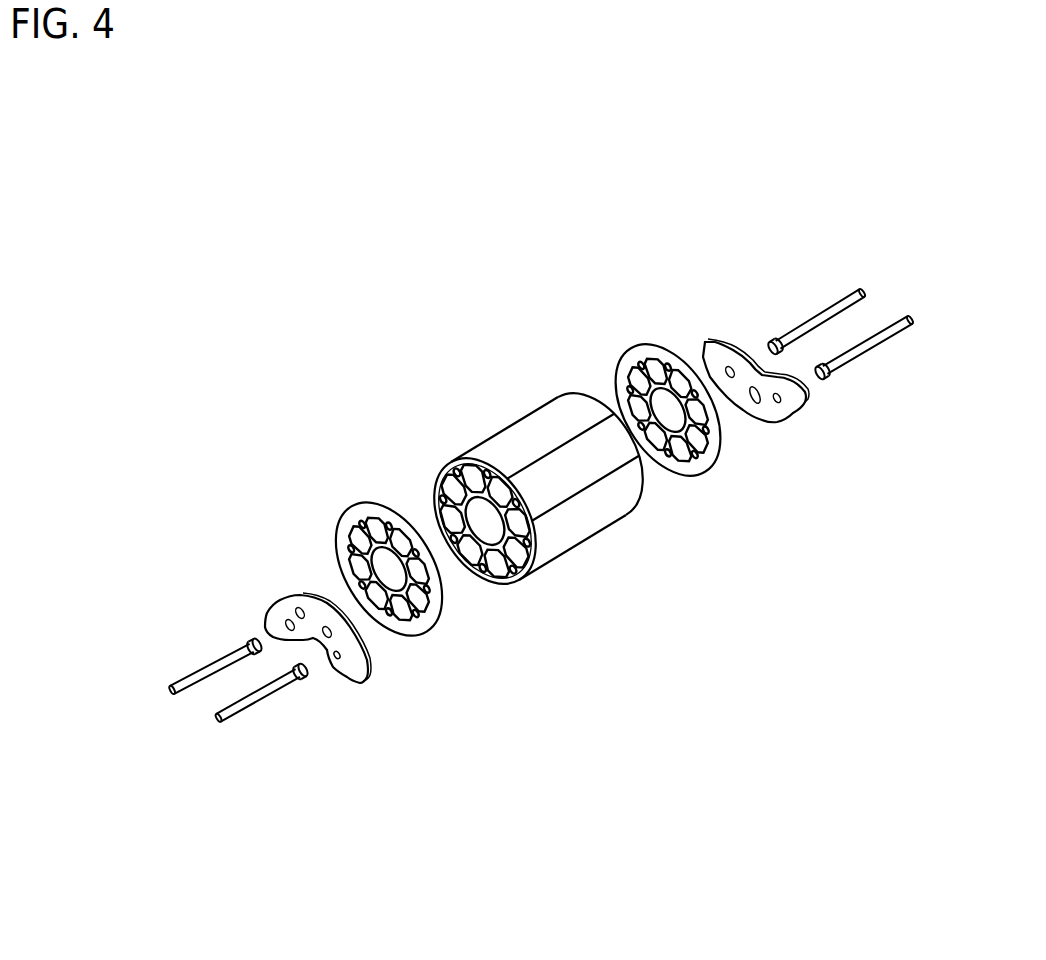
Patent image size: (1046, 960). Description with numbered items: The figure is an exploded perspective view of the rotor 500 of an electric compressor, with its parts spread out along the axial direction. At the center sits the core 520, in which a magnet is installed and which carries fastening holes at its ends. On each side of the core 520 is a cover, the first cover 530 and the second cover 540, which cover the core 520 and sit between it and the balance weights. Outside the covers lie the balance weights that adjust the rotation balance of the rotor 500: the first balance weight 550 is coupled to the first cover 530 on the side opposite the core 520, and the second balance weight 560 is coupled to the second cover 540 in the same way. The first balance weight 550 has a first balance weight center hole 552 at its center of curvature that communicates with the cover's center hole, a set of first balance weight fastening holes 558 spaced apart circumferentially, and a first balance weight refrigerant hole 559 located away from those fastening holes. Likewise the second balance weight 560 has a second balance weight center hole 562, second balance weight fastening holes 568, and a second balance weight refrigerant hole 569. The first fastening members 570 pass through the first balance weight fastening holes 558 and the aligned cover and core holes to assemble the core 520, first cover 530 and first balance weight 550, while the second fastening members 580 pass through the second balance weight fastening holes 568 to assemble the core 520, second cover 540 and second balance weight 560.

The rotor 500 is at (175, 284).
The core 520 is at (487, 418).
The first cover 530 is at (352, 500).
The second cover 540 is at (623, 337).
The first balance weight 550 is at (270, 587).
The first balance weight center hole 552 is at (322, 657).
The first balance weight fastening holes 558 is at (362, 673).
The first balance weight refrigerant hole 559 is at (298, 597).
The second balance weight 560 is at (707, 340).
The second balance weight center hole 562 is at (758, 402).
The second balance weight fastening holes 568 is at (732, 380).
The second balance weight refrigerant hole 569 is at (738, 358).
The first fastening members 570 is at (797, 280).
The second fastening members 580 is at (257, 727).